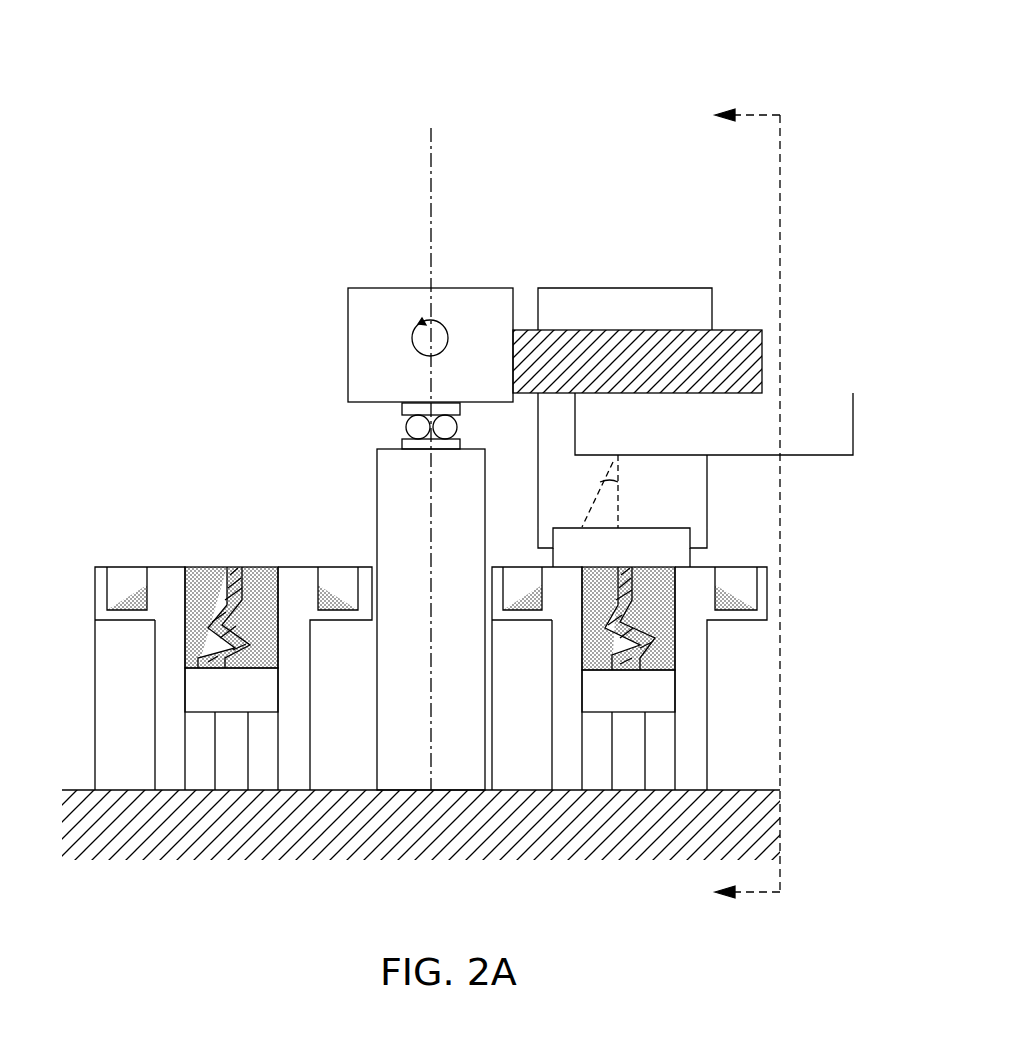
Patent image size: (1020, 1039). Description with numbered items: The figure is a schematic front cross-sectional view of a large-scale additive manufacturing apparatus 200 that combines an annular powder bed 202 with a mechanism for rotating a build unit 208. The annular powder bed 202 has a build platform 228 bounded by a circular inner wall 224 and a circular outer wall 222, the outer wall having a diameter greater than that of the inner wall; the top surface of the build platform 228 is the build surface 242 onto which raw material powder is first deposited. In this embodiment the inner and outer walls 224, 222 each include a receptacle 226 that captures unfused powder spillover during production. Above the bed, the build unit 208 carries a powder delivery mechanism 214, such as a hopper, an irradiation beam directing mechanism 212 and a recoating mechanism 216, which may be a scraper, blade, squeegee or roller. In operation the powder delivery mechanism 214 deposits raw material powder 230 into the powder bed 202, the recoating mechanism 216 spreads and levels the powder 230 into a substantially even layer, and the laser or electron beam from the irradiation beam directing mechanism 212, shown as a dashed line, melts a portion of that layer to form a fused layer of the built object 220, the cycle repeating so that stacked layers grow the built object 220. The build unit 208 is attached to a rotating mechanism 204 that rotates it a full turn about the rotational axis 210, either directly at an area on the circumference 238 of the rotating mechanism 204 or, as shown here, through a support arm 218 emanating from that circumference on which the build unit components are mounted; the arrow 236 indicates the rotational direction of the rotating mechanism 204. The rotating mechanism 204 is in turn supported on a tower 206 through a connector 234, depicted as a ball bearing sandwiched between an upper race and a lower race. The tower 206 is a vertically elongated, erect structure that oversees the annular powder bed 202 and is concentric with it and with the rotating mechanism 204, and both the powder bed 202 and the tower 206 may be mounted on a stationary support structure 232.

The large-scale additive manufacturing apparatus 200 is at (248, 93).
The annular powder bed 202 is at (85, 567).
The rotating mechanism 204 is at (348, 355).
The tower 206 is at (377, 470).
The build unit 208 is at (860, 283).
The rotational axis 210 is at (428, 145).
The irradiation beam directing mechanism 212 is at (810, 393).
The powder delivery mechanism 214 is at (660, 287).
The recoating mechanism 216 is at (660, 528).
The support arm 218 is at (745, 330).
The built object 220 is at (232, 580).
The circular outer wall 222 is at (153, 732).
The circular inner wall 224 is at (311, 750).
The receptacle 226 is at (127, 580).
The build platform 228 is at (197, 685).
The raw material powder 230 is at (135, 605).
The stationary support structure 232 is at (97, 860).
The connector 234 is at (402, 426).
The arrow 236 is at (445, 355).
The circumference 238 is at (346, 305).
The build surface 242 is at (255, 652).